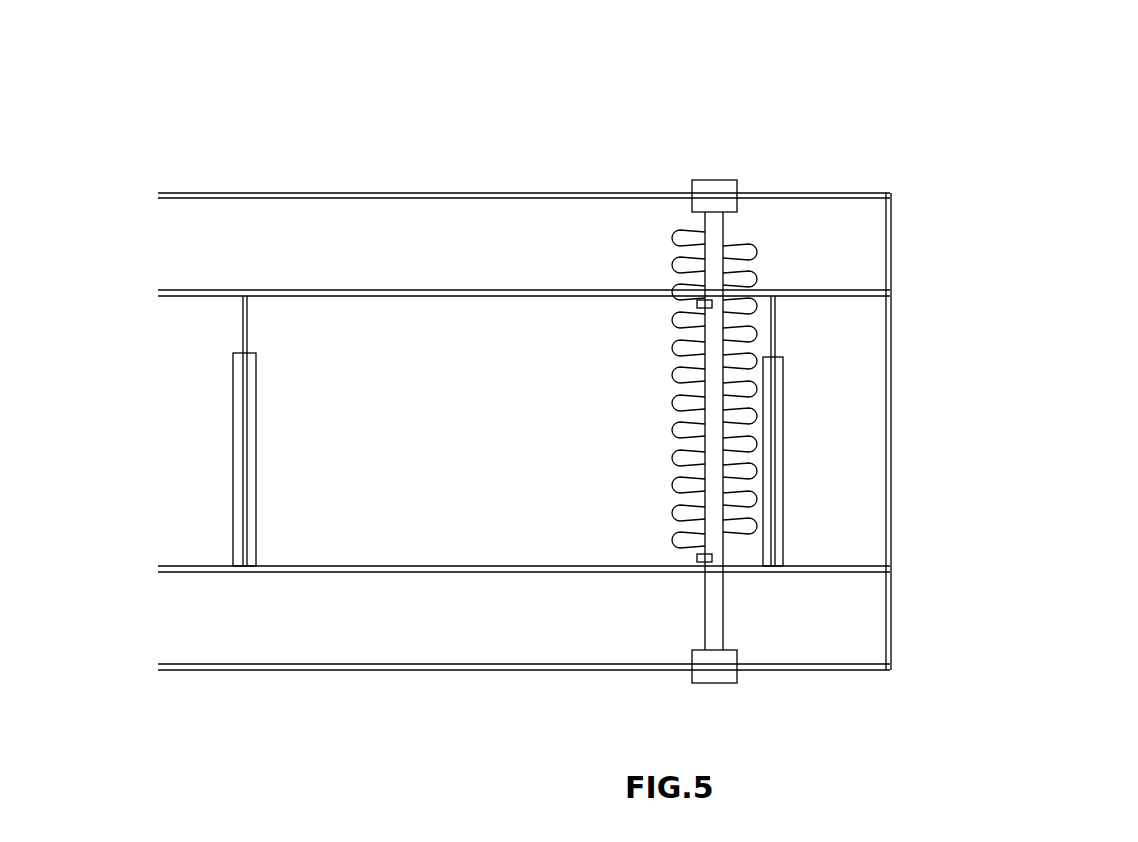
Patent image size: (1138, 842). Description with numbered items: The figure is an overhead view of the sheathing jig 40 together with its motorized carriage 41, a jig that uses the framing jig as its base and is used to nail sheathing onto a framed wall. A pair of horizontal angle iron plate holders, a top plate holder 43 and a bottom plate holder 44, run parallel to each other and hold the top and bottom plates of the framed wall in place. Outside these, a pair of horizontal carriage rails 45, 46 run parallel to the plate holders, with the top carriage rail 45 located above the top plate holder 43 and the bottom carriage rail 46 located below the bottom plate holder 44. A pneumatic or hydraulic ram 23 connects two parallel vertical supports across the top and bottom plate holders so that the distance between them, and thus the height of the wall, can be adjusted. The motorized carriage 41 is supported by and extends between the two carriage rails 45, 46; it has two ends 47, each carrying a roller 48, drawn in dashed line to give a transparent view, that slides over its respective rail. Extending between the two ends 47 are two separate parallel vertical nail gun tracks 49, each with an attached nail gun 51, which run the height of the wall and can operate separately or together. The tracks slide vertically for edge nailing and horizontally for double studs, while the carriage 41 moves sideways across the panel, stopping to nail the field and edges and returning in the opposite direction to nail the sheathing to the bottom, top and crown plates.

The pneumatic or hydraulic ram 23 is at (777, 445).
The sheathing jig 40 is at (943, 167).
The motorized carriage 41 is at (697, 187).
The top plate holder 43 is at (883, 293).
The bottom plate holder 44 is at (888, 572).
The top carriage rail 45 is at (888, 193).
The bottom carriage rail 46 is at (888, 670).
The carriage end 47 is at (724, 434).
The roller 48 is at (337, 295).
The nail gun track 49 is at (723, 232).
The nail gun 51 is at (758, 253).